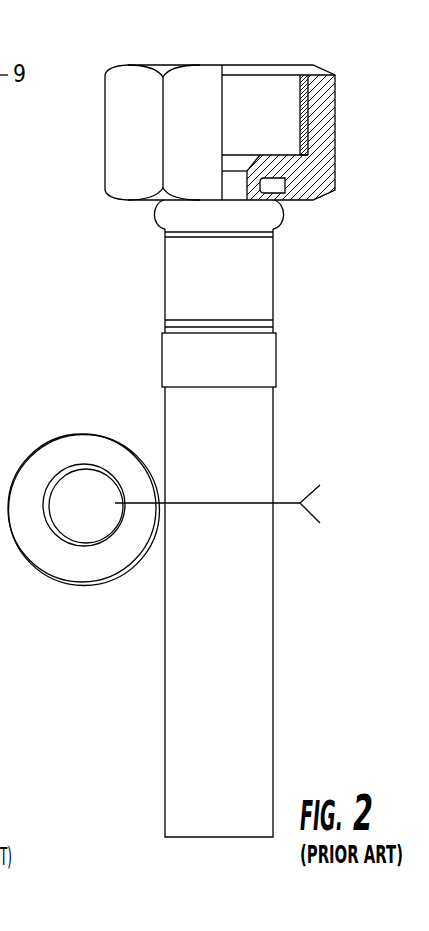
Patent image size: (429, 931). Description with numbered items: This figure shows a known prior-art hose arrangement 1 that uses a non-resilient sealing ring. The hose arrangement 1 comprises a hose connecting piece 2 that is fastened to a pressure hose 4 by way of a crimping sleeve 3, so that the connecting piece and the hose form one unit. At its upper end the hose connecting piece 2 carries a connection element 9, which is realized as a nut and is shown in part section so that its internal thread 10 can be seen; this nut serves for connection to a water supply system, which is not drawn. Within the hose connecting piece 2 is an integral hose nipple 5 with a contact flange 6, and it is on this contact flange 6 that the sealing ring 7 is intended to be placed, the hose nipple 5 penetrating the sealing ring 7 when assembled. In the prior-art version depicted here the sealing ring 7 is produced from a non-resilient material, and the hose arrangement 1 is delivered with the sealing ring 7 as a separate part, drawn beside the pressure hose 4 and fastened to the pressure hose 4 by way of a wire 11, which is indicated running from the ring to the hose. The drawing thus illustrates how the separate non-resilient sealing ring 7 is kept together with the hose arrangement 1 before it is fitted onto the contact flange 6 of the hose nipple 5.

The hose arrangement 1 is at (130, 340).
The hose connecting piece 2 is at (142, 224).
The crimping sleeve 3 is at (238, 293).
The pressure hose 4 is at (247, 612).
The hose nipple 5 is at (295, 200).
The contact flange 6 is at (278, 188).
The sealing ring 7 is at (84, 443).
The connection element 9 is at (331, 98).
The internal thread 10 is at (298, 110).
The wire 11 is at (281, 497).